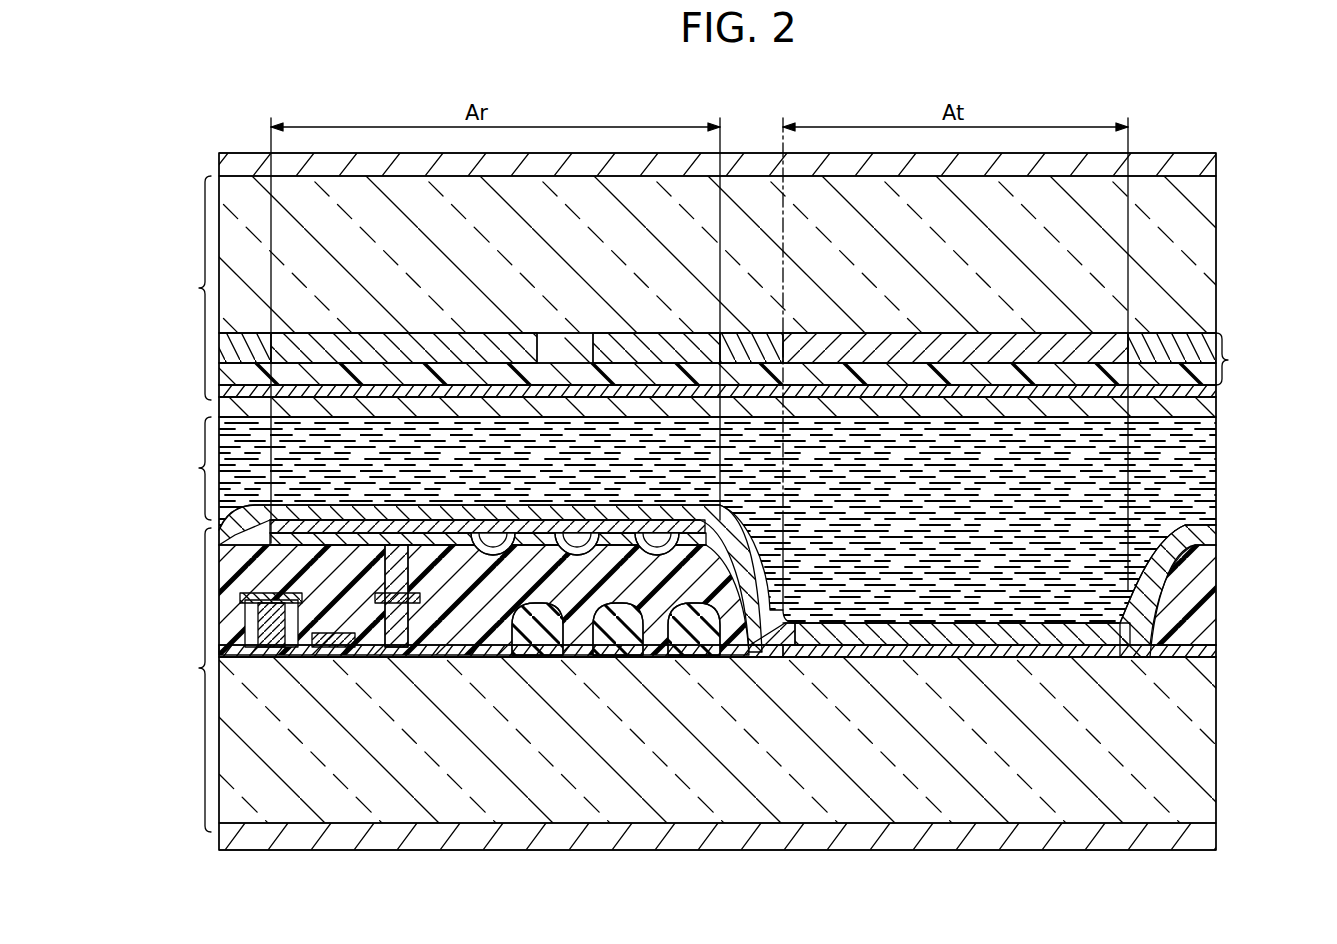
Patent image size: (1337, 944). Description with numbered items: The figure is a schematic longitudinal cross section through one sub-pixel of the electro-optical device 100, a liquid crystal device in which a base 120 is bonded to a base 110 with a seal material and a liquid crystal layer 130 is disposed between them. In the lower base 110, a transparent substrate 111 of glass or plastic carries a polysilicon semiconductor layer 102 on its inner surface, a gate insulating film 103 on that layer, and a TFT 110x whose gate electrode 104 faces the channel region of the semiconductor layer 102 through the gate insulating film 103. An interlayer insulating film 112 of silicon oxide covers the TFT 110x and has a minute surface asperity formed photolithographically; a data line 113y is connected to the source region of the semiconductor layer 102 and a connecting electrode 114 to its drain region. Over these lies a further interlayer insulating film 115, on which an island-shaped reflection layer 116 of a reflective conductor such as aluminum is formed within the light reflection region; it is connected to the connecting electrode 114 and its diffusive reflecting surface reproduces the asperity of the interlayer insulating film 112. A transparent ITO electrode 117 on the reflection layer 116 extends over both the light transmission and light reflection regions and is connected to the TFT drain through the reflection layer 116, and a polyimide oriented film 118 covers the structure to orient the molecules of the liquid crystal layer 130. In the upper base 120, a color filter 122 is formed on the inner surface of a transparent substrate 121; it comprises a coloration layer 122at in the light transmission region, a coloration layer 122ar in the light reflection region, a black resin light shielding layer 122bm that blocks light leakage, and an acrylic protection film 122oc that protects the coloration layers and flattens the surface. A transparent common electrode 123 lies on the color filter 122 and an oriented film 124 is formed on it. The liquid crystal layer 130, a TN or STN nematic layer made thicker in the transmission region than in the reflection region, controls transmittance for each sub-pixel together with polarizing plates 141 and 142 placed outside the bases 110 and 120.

The electro-optical device 100 is at (792, 89).
The semiconductor layer 102 is at (280, 660).
The gate insulating film 103 is at (365, 660).
The gate electrode 104 is at (240, 625).
The base 110 is at (703, 653).
The TFT 110x is at (267, 661).
The transparent substrate 111 is at (1200, 765).
The interlayer insulating film 112 is at (620, 660).
The data line 113y is at (255, 570).
The connecting electrode 114 is at (448, 655).
The interlayer insulating film 115 is at (740, 655).
The reflection layer 116 is at (620, 517).
The electrode 117 is at (893, 645).
The oriented film 118 is at (1030, 632).
The base 120 is at (184, 288).
The transparent substrate 121 is at (1200, 240).
The color filter 122 is at (775, 344).
The coloration layer 122ar is at (602, 340).
The coloration layer 122at is at (960, 345).
The light shielding layer 122bm is at (1188, 346).
The protection film 122oc is at (1196, 422).
The electrode 123 is at (950, 397).
The oriented film 124 is at (813, 407).
The liquid crystal layer 130 is at (681, 520).
The polarizing plate 141 is at (1200, 833).
The polarizing plate 142 is at (1196, 172).